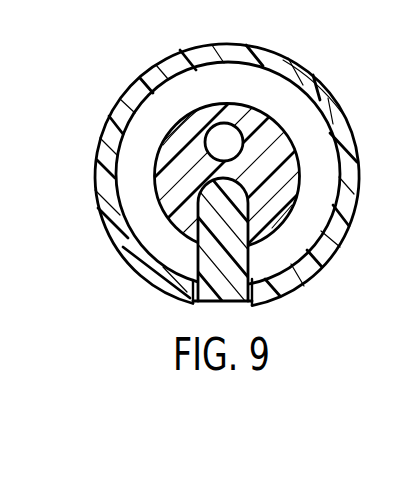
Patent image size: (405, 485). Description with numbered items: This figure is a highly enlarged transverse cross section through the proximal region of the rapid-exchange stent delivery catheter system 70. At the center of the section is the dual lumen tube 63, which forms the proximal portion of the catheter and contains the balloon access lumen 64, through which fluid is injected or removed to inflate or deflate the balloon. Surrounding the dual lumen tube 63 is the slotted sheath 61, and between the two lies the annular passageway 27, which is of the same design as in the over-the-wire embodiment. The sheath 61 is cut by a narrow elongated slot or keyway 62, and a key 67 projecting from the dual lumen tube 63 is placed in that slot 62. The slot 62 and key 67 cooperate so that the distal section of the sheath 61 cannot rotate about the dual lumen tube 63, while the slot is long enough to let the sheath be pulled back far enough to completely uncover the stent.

The stent delivery catheter system 70 is at (99, 105).
The slotted sheath 61 is at (109, 229).
The annular passageway 27 is at (257, 83).
The dual lumen tube 63 is at (275, 228).
The balloon access lumen 64 is at (236, 143).
The slot 62 is at (236, 306).
The key 67 is at (223, 304).